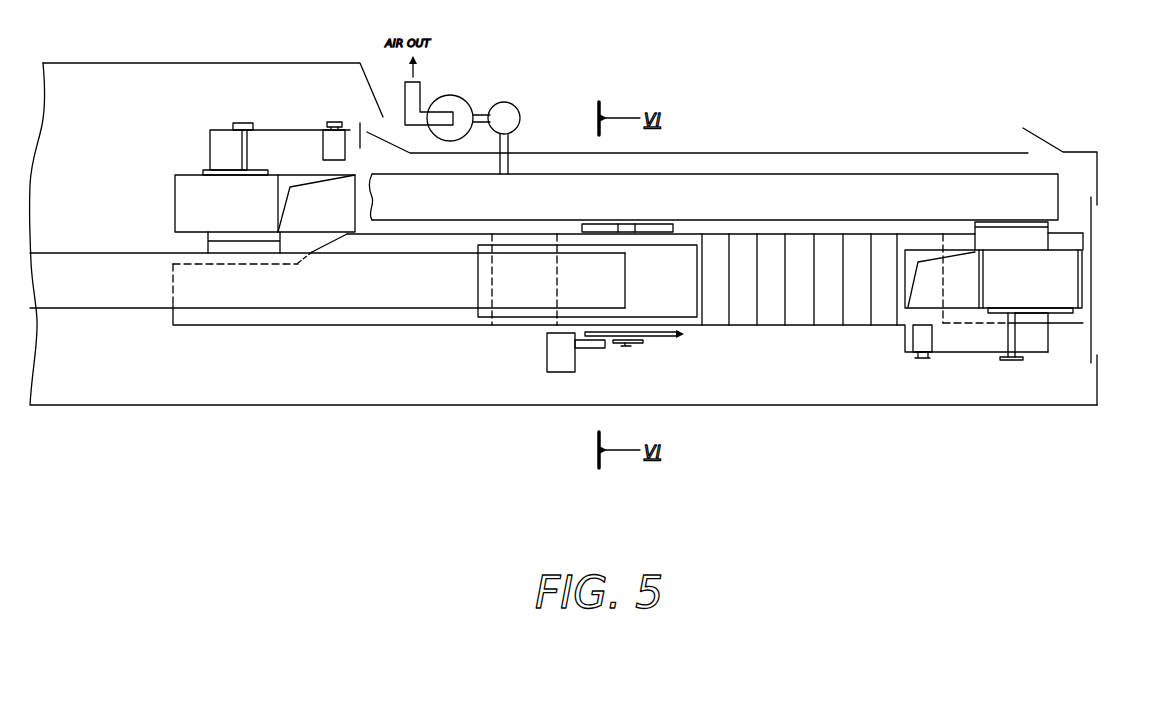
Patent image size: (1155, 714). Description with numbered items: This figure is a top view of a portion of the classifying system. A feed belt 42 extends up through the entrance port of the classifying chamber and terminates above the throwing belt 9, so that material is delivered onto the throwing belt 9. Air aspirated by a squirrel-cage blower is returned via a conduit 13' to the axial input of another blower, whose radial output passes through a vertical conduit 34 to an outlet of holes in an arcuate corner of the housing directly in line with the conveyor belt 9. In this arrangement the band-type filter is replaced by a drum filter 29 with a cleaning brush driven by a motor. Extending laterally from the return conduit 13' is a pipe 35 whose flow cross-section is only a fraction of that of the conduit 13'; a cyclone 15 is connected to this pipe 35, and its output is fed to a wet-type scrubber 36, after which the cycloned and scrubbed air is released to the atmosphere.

The conduit 13' is at (713, 167).
The wet-type scrubber 36 is at (460, 107).
The cyclone 15 is at (512, 108).
The pipe 35 is at (508, 164).
The vertical conduit 34 is at (318, 208).
The feed belt 42 is at (527, 282).
The throwing belt 9 is at (672, 292).
The drum filter 29 is at (693, 322).